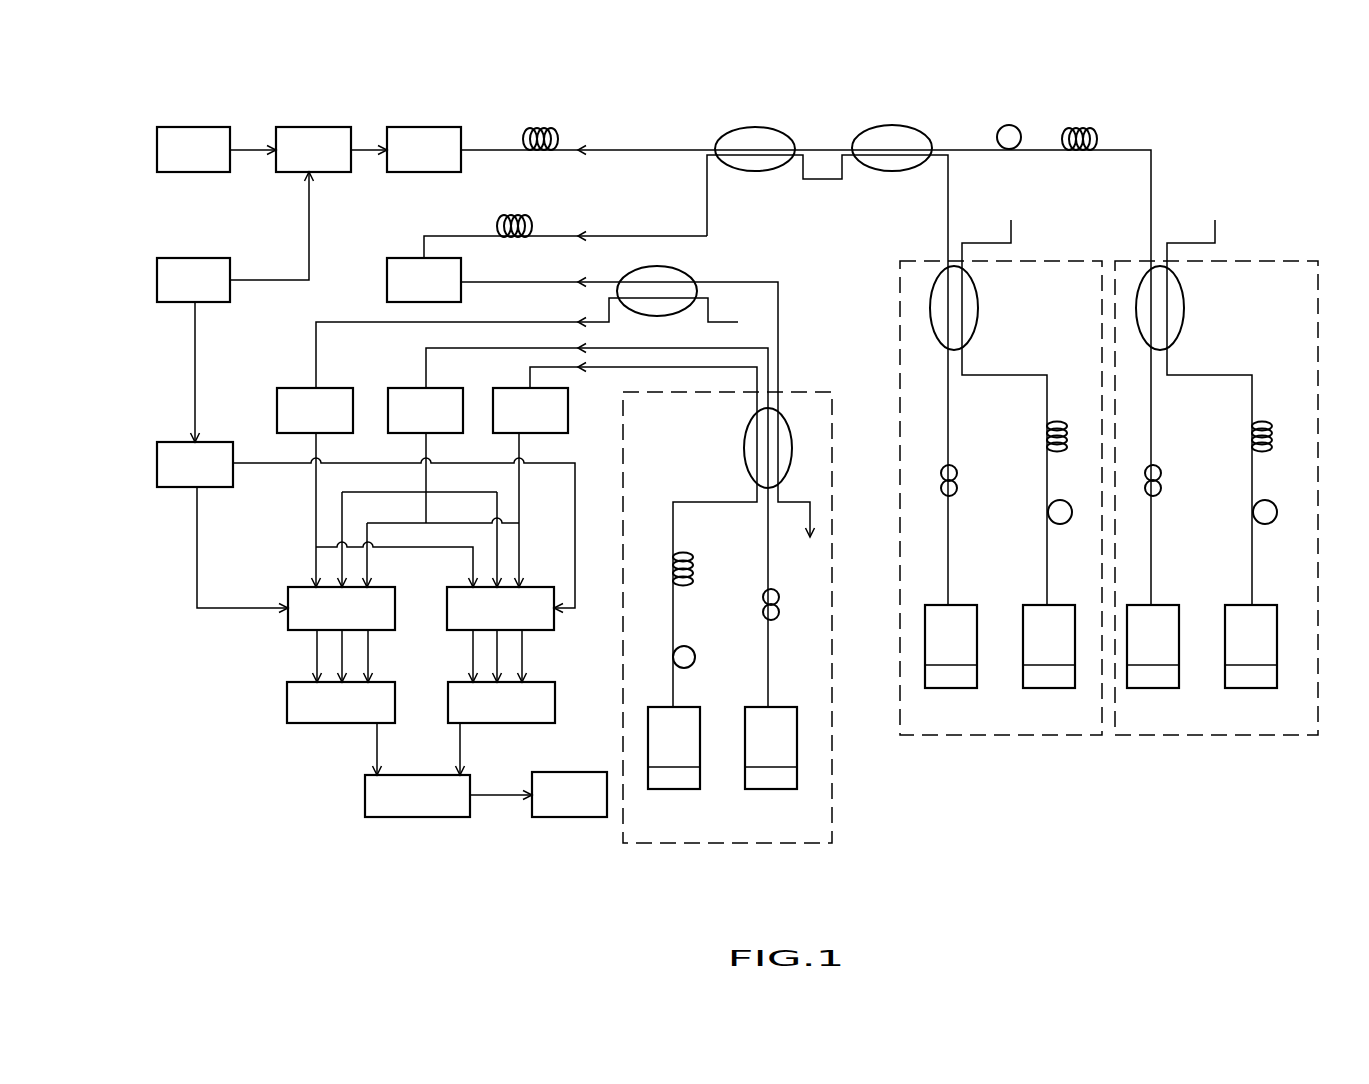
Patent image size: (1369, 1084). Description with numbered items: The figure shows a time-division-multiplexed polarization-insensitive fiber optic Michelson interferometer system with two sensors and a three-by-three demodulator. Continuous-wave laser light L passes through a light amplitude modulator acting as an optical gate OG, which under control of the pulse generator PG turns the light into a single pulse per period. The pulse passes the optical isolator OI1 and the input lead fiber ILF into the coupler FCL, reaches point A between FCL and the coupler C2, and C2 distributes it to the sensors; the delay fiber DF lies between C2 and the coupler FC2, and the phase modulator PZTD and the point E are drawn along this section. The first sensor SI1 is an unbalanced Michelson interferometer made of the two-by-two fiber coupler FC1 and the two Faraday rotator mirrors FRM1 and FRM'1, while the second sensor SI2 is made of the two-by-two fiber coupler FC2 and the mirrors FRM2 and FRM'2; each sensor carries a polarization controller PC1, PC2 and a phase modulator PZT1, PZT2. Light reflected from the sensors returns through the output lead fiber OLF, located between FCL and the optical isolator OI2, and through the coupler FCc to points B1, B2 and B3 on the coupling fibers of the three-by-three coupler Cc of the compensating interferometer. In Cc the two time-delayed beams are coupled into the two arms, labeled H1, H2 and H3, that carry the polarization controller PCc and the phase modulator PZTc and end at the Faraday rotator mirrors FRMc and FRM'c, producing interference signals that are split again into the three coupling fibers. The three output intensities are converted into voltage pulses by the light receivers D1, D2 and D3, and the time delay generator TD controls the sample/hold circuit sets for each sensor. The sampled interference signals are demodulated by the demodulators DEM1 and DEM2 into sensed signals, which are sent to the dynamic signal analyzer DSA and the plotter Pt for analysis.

The continuous-wave laser light L is at (193, 149).
The optical gate OG is at (313, 149).
The optical isolator OI1 is at (424, 149).
The optical isolator OI2 is at (424, 280).
The pulse generator PG is at (193, 280).
The time delay generator TD is at (195, 464).
The light receiver D1 is at (315, 410).
The light receiver D2 is at (425, 410).
The light receiver D3 is at (530, 410).
The 3×3 demodulator DEM1 is at (341, 702).
The 3×3 demodulator DEM2 is at (501, 702).
The dynamic signal analyzer DSA is at (417, 796).
The plotter Pt is at (569, 794).
The input lead fiber ILF is at (540, 125).
The output lead fiber OLF is at (513, 213).
The coupler FCL is at (755, 136).
The point A is at (823, 170).
The coupler C2 is at (892, 136).
The phase modulator PZTD is at (1010, 152).
The delay fiber DF is at (1079, 125).
The electric field E is at (1101, 170).
The coupler FCc is at (677, 286).
The point B1 is at (795, 328).
The point B2 is at (751, 342).
The point B3 is at (724, 383).
The 3×3 fiber coupler Cc is at (783, 448).
The coupling fiber H1 is at (790, 521).
The coupling fiber H2 is at (786, 557).
The coupling fiber H3 is at (735, 521).
The phase modulator PZTc is at (708, 658).
The polarization controller PCc is at (792, 605).
The Faraday rotator mirror FRMc is at (675, 766).
The Faraday rotator mirror FRM'c is at (773, 766).
The first sensor SI1 is at (1001, 518).
The second sensor SI2 is at (1216, 518).
The 2×2 fiber coupler FC1 is at (971, 308).
The 2×2 fiber coupler FC2 is at (1177, 308).
The polarization controller PC1 is at (967, 483).
The polarization controller PC2 is at (1172, 483).
The phase modulator PZT1 is at (1072, 502).
The phase modulator PZT2 is at (1277, 502).
The Faraday rotator mirror FRM1 is at (953, 668).
The Faraday rotator mirror FRM'1 is at (1050, 668).
The Faraday rotator mirror FRM2 is at (1155, 668).
The Faraday rotator mirror FRM'2 is at (1252, 668).